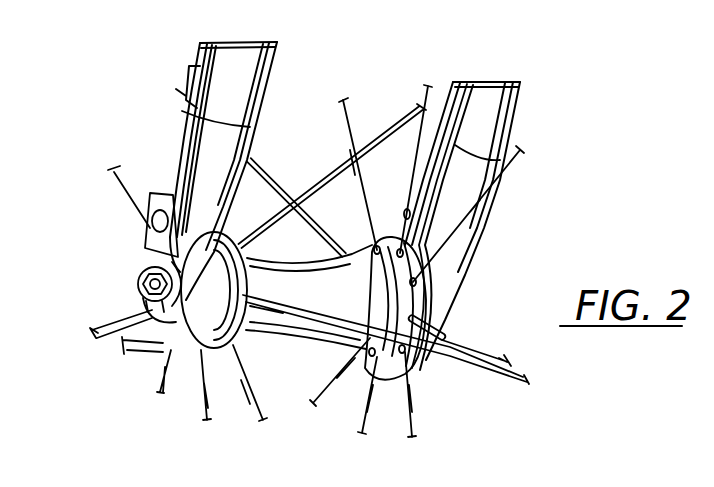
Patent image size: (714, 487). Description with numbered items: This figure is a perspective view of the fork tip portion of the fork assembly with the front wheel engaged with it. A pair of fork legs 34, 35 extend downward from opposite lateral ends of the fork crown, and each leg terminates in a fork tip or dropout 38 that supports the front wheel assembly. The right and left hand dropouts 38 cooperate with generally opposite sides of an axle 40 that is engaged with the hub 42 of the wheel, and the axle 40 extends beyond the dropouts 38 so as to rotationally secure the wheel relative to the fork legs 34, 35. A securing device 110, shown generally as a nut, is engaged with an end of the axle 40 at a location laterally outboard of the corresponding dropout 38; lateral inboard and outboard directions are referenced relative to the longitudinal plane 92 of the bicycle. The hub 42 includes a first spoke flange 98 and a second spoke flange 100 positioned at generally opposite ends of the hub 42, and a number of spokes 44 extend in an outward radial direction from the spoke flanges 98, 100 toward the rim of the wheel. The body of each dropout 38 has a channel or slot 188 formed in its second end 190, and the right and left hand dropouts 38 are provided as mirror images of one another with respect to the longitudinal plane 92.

The fork leg 34 is at (200, 45).
The fork leg 35 is at (512, 101).
The dropout 38 is at (188, 135).
The axle 40 is at (137, 281).
The hub 42 is at (279, 325).
The spokes 44 is at (398, 114).
The longitudinal plane 92 is at (152, 210).
The first spoke flange 98 is at (387, 408).
The second spoke flange 100 is at (190, 380).
The securing device 110 is at (140, 294).
The channel or slot 188 is at (140, 332).
The second end 190 is at (160, 344).